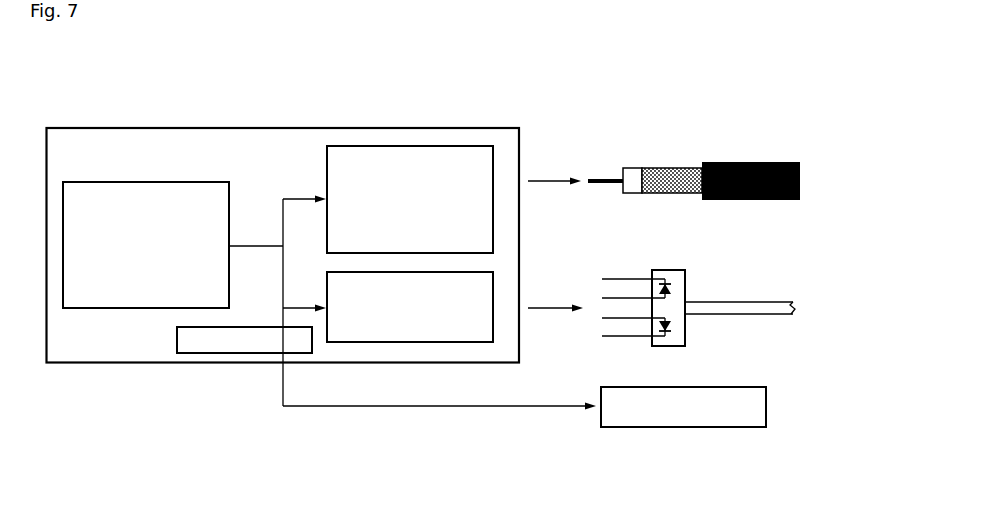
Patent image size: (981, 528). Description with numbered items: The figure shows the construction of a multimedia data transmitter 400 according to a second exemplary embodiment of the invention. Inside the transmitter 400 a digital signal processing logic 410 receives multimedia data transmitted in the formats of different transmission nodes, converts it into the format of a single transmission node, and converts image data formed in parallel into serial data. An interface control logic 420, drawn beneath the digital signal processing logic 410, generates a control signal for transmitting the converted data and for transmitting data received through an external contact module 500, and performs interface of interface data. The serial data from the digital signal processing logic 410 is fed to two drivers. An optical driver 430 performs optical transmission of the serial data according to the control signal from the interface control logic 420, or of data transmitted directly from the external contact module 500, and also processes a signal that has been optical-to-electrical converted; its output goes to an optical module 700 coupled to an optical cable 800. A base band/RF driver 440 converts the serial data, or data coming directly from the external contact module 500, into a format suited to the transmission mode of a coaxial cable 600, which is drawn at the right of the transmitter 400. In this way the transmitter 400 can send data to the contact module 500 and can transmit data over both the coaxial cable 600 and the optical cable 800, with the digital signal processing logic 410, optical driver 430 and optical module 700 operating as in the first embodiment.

The multimedia data transmitter 400 is at (215, 127).
The digital signal processing logic 410 is at (118, 310).
The interface control logic 420 is at (218, 354).
The optical driver 430 is at (493, 298).
The base band/RF driver 440 is at (412, 145).
The external contact module 500 is at (690, 428).
The coaxial cable 600 is at (753, 162).
The optical module 700 is at (672, 270).
The optical cable 800 is at (748, 301).